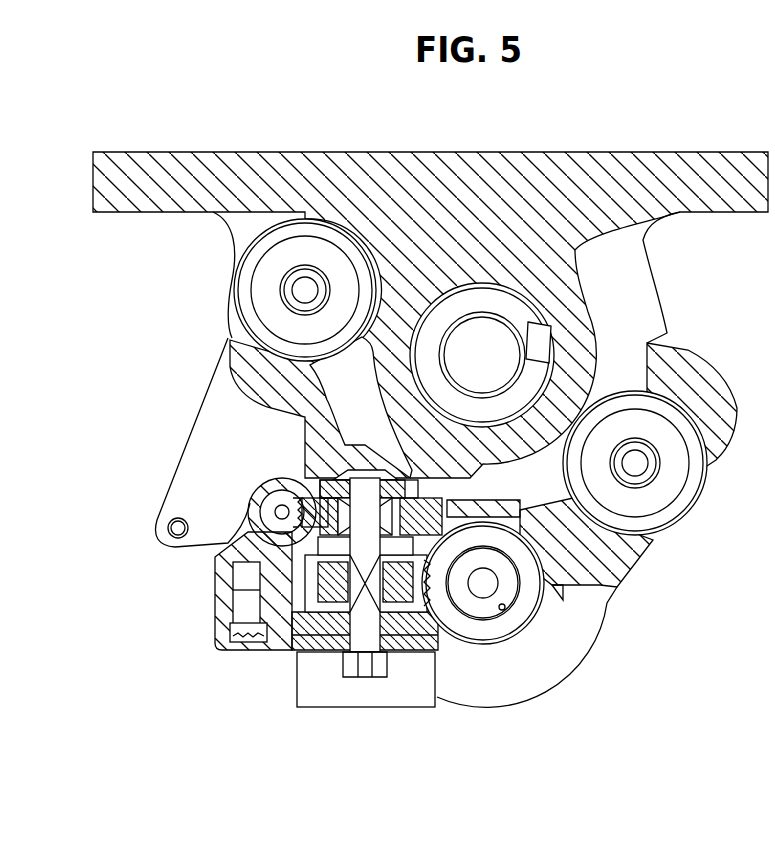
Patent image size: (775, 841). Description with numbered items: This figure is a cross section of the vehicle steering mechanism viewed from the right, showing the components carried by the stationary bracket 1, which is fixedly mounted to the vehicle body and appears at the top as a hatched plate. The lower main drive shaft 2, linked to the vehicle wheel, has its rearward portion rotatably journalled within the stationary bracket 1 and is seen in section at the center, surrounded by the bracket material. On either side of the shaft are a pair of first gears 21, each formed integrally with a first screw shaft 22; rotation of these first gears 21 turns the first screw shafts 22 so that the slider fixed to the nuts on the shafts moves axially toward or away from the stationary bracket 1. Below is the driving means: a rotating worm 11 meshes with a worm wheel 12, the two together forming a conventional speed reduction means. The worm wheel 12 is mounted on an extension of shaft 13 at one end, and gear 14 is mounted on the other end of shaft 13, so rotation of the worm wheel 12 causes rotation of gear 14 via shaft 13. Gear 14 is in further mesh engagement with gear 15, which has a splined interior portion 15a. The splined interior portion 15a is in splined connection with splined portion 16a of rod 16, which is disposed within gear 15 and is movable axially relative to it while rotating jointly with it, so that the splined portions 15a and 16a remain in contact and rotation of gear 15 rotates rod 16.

The stationary bracket 1 is at (622, 152).
The lower main drive shaft 2 is at (513, 350).
The worm 11 is at (258, 492).
The worm wheel 12 is at (292, 478).
The shaft 13 is at (333, 543).
The gear 14 is at (338, 582).
The gear 15 is at (482, 623).
The splined interior portion 15a is at (498, 608).
The rod 16 is at (470, 593).
The splined portion 16a is at (520, 593).
The first gear 21 is at (268, 312).
The first screw shaft 22 is at (292, 291).